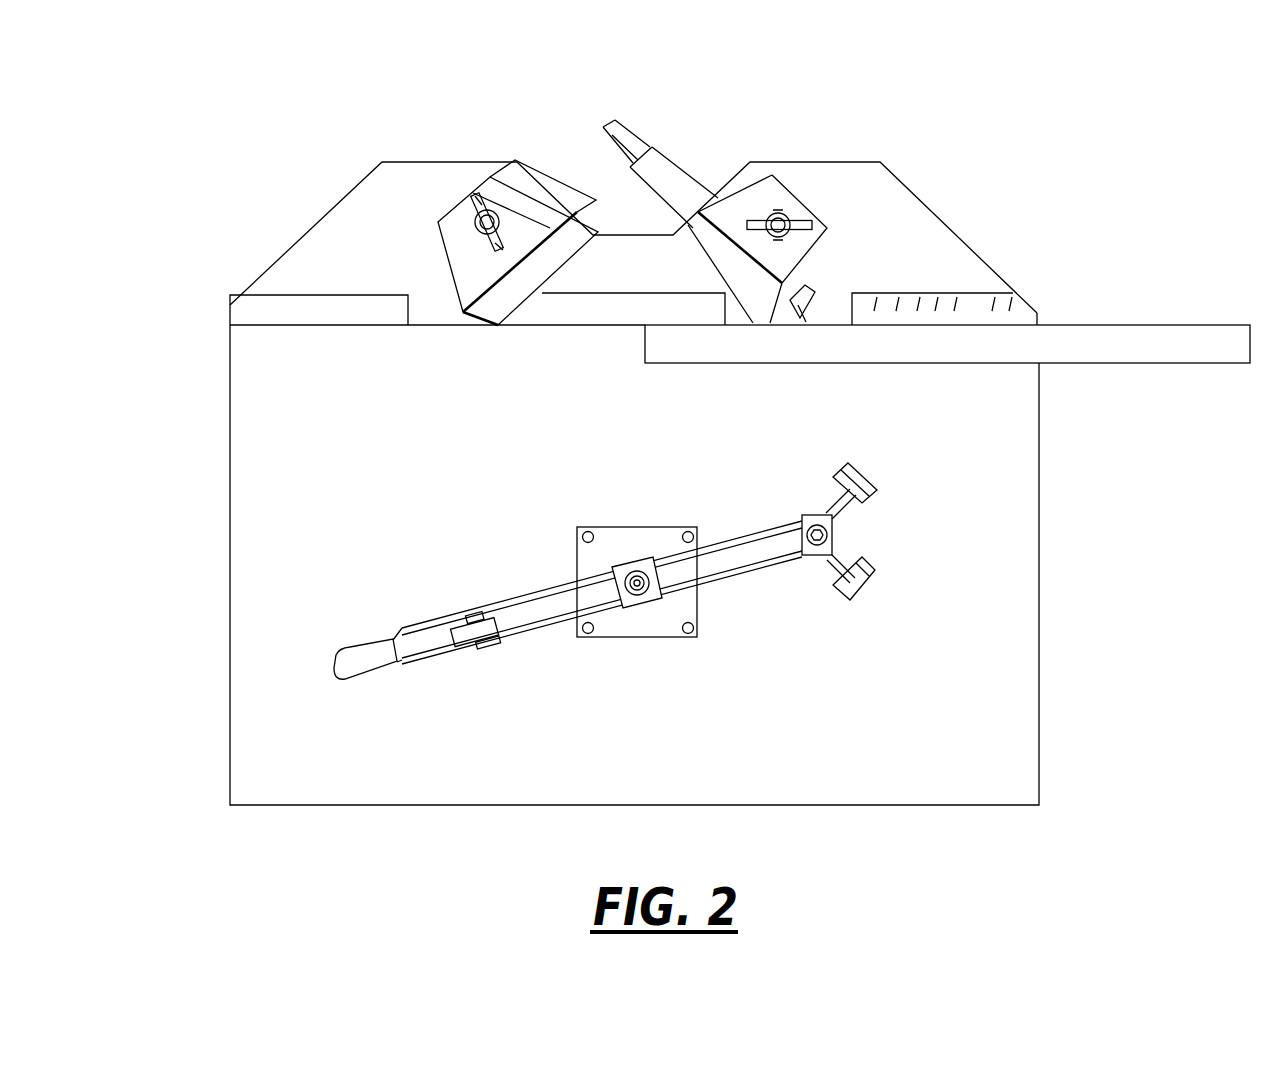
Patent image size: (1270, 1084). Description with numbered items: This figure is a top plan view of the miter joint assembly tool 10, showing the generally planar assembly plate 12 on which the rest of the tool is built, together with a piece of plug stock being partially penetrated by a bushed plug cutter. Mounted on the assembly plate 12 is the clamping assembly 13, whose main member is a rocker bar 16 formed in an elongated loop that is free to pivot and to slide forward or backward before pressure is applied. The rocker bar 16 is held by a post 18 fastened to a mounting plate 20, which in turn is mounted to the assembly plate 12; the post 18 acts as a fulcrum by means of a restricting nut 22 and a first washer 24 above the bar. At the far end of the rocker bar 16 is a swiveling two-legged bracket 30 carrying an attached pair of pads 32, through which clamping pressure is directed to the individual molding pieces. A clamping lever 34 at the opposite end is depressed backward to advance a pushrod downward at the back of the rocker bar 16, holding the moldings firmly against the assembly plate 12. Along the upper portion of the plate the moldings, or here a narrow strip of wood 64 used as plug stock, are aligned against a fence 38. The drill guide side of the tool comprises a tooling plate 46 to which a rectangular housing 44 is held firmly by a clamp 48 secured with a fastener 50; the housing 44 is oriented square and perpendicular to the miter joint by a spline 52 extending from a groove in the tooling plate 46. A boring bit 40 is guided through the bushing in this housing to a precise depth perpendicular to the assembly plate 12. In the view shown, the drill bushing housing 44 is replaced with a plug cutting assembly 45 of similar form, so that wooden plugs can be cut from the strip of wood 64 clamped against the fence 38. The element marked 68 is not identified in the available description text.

The miter joint assembly tool 10 is at (230, 139).
The assembly plate 12 is at (348, 396).
The clamping assembly 13 is at (543, 538).
The rocker bar 16 is at (762, 574).
The post 18 is at (643, 594).
The mounting plate 20 is at (653, 524).
The restricting nut 22 is at (630, 599).
The first washer 24 is at (625, 565).
The two-legged bracket 30 is at (817, 559).
The pads 32 is at (879, 501).
The clamping lever 34 is at (360, 673).
The fence 38 is at (360, 312).
The boring bit 40 is at (686, 168).
The rectangular housing 44 is at (528, 193).
The plug cutting assembly 45 is at (813, 275).
The tooling plate 46 is at (383, 246).
The clamp 48 is at (487, 182).
The fastener 50 is at (497, 223).
The spline 52 is at (430, 218).
The narrow strip of wood 64 is at (1100, 368).
The wing nut 68 is at (476, 200).